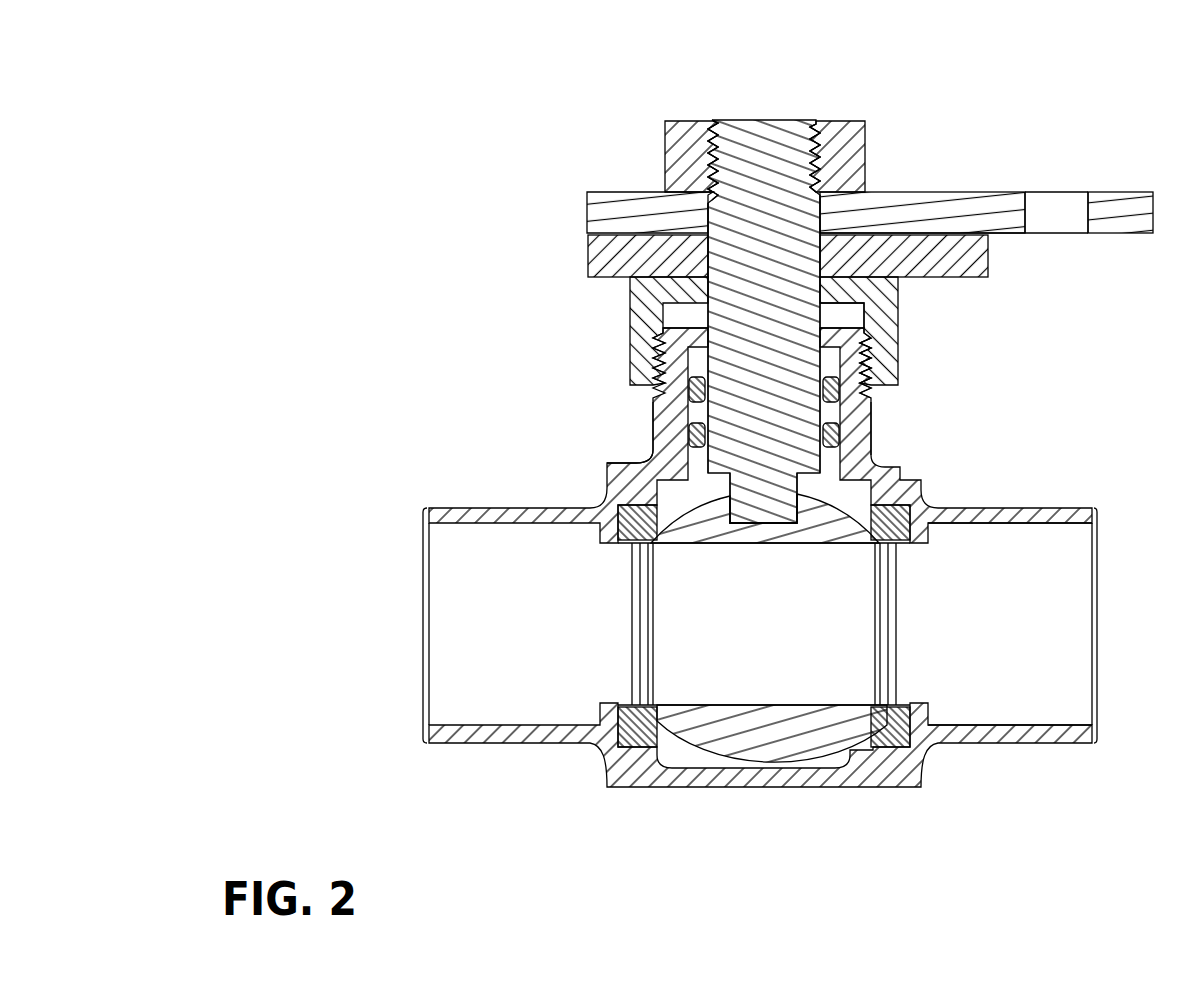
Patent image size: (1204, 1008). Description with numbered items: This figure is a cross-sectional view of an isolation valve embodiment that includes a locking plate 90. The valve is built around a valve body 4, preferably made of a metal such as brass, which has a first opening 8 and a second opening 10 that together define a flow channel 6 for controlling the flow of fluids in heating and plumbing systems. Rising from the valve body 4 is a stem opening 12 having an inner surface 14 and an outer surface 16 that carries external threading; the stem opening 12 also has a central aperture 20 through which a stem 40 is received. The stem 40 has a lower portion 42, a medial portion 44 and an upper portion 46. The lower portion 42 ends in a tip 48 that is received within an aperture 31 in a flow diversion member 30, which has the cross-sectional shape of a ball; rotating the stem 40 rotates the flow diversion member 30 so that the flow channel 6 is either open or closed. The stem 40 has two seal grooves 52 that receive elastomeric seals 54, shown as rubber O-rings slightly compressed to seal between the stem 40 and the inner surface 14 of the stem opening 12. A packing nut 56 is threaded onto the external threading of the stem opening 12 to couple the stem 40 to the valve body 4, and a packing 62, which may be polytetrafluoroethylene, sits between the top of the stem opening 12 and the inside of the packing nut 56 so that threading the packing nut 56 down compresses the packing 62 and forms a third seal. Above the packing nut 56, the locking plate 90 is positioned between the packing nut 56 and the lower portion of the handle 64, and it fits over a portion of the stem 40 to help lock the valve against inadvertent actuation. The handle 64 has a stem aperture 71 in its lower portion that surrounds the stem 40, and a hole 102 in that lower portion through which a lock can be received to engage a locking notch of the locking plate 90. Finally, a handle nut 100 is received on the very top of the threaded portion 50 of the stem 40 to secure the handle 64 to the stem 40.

The valve body 4 is at (617, 767).
The flow channel 6 is at (1035, 610).
The first opening 8 is at (425, 615).
The second opening 10 is at (1097, 548).
The stem opening 12 is at (860, 430).
The inner surface 14 is at (657, 404).
The outer surface 16 is at (845, 410).
The central aperture 20 is at (665, 338).
The flow diversion member 30 is at (797, 735).
The aperture 31 is at (782, 500).
The stem 40 is at (845, 180).
The lower portion 42 is at (620, 478).
The medial portion 44 is at (720, 290).
The upper portion 46 is at (755, 145).
The tip 48 is at (763, 533).
The threaded portion 50 is at (780, 230).
The seal grooves 52 is at (656, 318).
The elastomeric seals 54 is at (690, 386).
The packing nut 56 is at (900, 290).
The packing 62 is at (862, 312).
The handle 64 is at (937, 207).
The stem aperture 71 is at (878, 215).
The locking plate 90 is at (965, 250).
The handle nut 100 is at (680, 165).
The hole 102 is at (1053, 207).